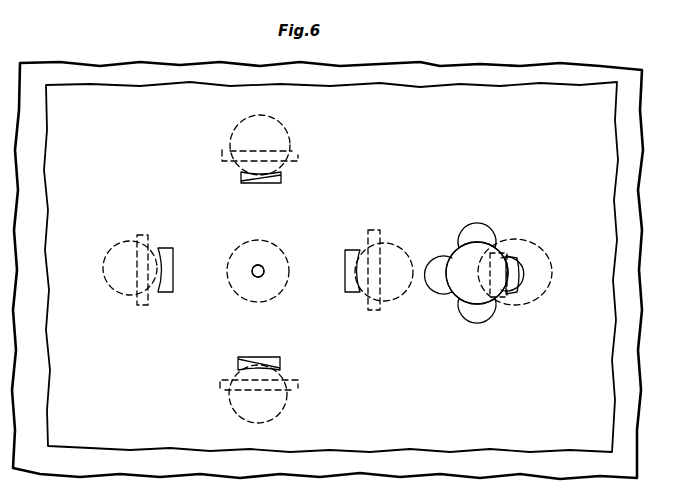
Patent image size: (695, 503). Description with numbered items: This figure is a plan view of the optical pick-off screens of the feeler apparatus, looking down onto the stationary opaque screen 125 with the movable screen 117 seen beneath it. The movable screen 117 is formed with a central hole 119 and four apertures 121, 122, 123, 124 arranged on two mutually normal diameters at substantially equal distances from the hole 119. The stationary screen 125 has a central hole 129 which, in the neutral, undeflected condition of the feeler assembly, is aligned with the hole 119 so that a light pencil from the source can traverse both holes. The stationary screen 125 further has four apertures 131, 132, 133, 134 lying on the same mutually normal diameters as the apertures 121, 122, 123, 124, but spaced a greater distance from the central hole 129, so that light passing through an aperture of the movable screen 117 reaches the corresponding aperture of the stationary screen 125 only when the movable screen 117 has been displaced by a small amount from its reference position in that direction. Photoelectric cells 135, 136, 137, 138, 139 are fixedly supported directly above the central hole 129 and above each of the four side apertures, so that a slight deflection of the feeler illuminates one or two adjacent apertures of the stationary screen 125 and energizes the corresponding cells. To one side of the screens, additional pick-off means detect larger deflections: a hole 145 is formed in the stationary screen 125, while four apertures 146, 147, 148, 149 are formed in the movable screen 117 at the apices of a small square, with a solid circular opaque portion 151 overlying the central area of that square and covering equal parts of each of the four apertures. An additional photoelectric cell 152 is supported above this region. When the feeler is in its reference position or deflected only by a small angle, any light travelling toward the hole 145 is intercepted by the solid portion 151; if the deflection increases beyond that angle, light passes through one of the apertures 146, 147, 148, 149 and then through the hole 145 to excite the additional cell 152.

The movable screen 117 is at (426, 106).
The stationary opaque screen 125 is at (541, 79).
The central hole 119 is at (255, 265).
The aperture 121 is at (245, 181).
The aperture 122 is at (166, 250).
The aperture 123 is at (271, 360).
The aperture 124 is at (349, 292).
The central hole 129 is at (286, 251).
The aperture 131 is at (222, 152).
The aperture 132 is at (140, 305).
The aperture 133 is at (226, 391).
The aperture 134 is at (378, 310).
The photoelectric cell 135 is at (232, 286).
The photoelectric cell 136 is at (292, 138).
The photoelectric cell 137 is at (119, 248).
The photoelectric cell 138 is at (291, 391).
The photoelectric cell 139 is at (396, 246).
The hole 145 is at (518, 262).
The aperture 146 is at (482, 229).
The aperture 147 is at (437, 288).
The aperture 148 is at (465, 320).
The aperture 149 is at (490, 292).
The solid circular opaque portion 151 is at (487, 252).
The additional photoelectric cell 152 is at (550, 273).